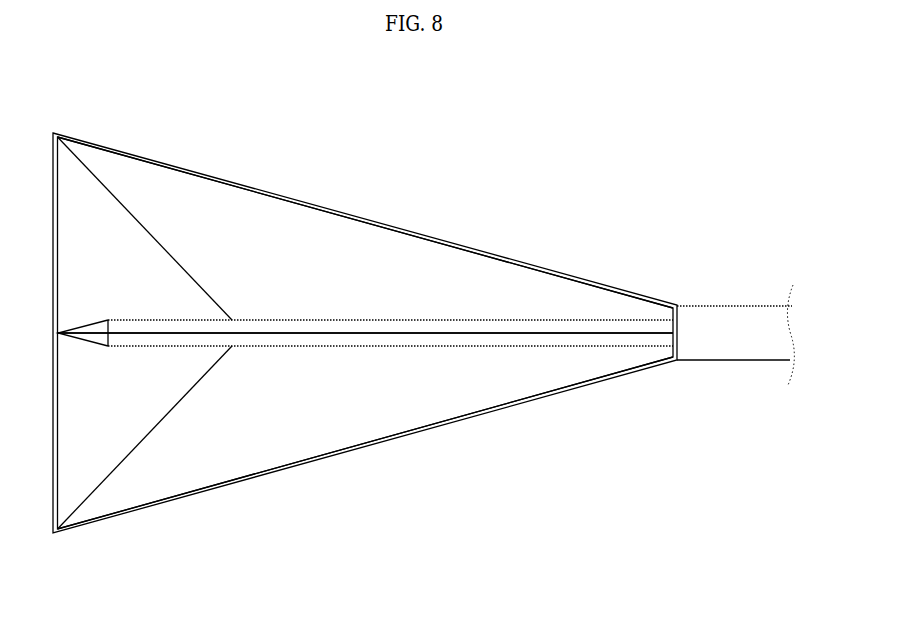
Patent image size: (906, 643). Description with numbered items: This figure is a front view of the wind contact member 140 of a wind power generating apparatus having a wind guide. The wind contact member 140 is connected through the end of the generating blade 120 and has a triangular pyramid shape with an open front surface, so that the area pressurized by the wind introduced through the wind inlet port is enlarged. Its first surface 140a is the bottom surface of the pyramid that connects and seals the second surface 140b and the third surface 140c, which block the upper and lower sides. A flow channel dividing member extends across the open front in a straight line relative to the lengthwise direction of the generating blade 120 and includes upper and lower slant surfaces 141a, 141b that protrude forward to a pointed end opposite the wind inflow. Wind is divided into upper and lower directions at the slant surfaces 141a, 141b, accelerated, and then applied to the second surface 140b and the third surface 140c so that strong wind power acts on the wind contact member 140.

The wind contact member 140 is at (455, 142).
The first surface of the wind contact member 140a is at (118, 418).
The second surface of the wind contact member 140b is at (363, 258).
The third surface of the wind contact member 140c is at (364, 420).
The upper slant surface 141a is at (531, 313).
The lower slant surface 141b is at (531, 350).
The generating blade 120 is at (740, 318).